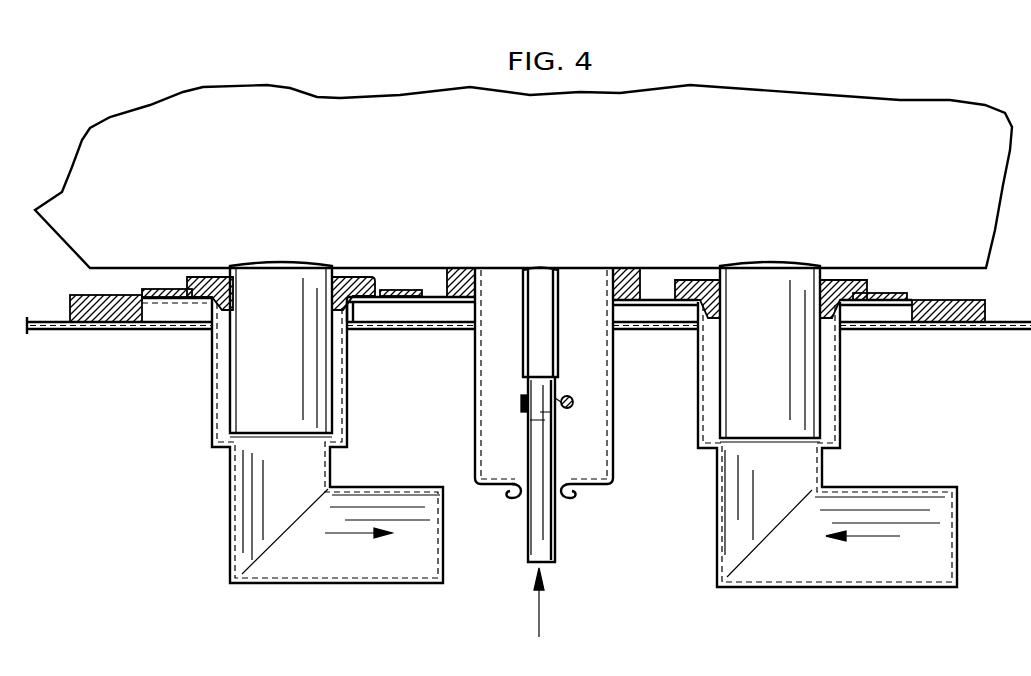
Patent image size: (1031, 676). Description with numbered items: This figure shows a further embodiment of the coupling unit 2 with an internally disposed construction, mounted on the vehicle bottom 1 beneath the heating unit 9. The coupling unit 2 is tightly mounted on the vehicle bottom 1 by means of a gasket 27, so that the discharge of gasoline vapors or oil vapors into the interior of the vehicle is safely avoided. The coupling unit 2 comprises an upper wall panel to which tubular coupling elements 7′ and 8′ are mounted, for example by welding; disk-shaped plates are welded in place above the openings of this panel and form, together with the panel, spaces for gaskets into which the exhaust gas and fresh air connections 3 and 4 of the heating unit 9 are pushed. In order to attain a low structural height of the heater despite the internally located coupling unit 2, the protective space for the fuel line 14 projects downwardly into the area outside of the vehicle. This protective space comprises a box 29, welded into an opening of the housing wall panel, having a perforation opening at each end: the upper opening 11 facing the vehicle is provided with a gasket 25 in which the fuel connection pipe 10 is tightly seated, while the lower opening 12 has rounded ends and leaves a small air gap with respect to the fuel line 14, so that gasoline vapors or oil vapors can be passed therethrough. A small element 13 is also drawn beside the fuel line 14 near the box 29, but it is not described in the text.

The vehicle bottom 1 is at (1016, 333).
The coupling unit 2 is at (403, 290).
The exhaust gas coupling connection 3 is at (275, 290).
The fresh air coupling connection 4 is at (755, 295).
The tubular coupling element 7′ is at (211, 392).
The tubular coupling element 8′ is at (842, 391).
The heating unit 9 is at (546, 149).
The fuel connection pipe 10 is at (540, 285).
The upper perforation opening 11 is at (512, 283).
The lower perforation opening 12 is at (516, 496).
The locking pin 13 is at (573, 406).
The fuel line 14 is at (556, 545).
The gasket 25 is at (620, 268).
The gasket 27 is at (985, 315).
The box 29 is at (614, 400).